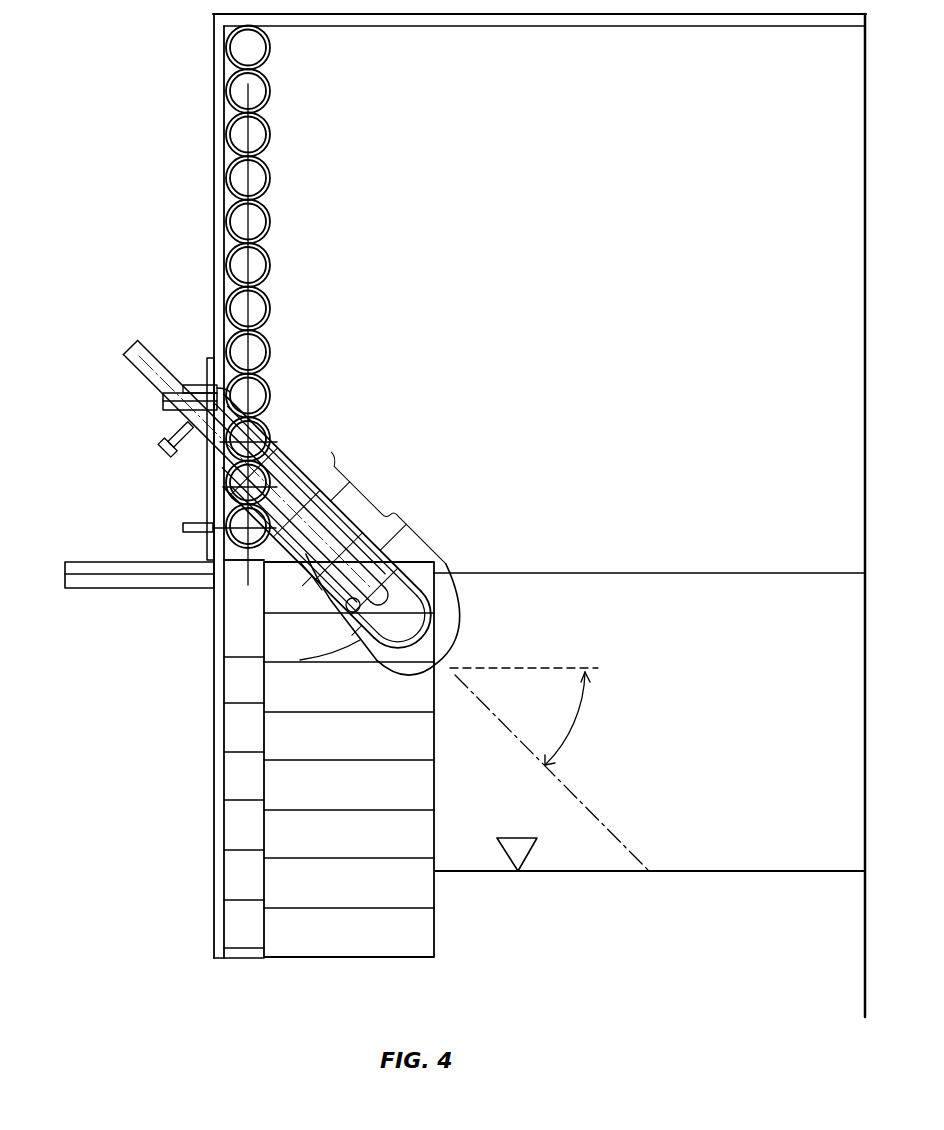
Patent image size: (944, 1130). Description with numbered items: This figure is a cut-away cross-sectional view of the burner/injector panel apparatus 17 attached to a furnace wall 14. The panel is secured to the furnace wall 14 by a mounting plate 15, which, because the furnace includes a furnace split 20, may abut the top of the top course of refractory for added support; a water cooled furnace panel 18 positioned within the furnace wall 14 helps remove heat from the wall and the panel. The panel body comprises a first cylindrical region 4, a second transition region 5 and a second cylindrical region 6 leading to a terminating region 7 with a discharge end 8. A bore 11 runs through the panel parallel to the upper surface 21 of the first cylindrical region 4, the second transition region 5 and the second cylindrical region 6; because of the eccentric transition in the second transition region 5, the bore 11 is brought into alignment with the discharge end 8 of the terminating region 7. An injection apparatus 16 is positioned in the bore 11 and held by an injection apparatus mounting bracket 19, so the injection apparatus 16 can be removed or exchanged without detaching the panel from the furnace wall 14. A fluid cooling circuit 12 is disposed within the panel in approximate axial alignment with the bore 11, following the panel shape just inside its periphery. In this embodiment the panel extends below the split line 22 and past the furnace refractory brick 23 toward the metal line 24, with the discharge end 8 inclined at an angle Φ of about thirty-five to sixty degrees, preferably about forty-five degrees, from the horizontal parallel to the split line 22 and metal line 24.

The first cylindrical region 4 is at (305, 568).
The second transition region 5 is at (396, 535).
The second cylindrical region 6 is at (300, 660).
The terminating region 7 is at (448, 600).
The discharge end 8 is at (456, 666).
The bore 11 is at (231, 507).
The fluid cooling circuit 12 is at (412, 609).
The furnace wall 14 is at (212, 149).
The mounting plate 15 is at (209, 368).
The injection apparatus 16 is at (124, 357).
The burner/injector panel apparatus 17 is at (346, 460).
The water cooled furnace panel 18 is at (272, 223).
The injection apparatus mounting bracket 19 is at (170, 447).
The furnace split 20 is at (64, 573).
The upper surface 21 is at (406, 508).
The split line 22 is at (795, 572).
The furnace refractory brick 23 is at (285, 760).
The metal line 24 is at (758, 870).